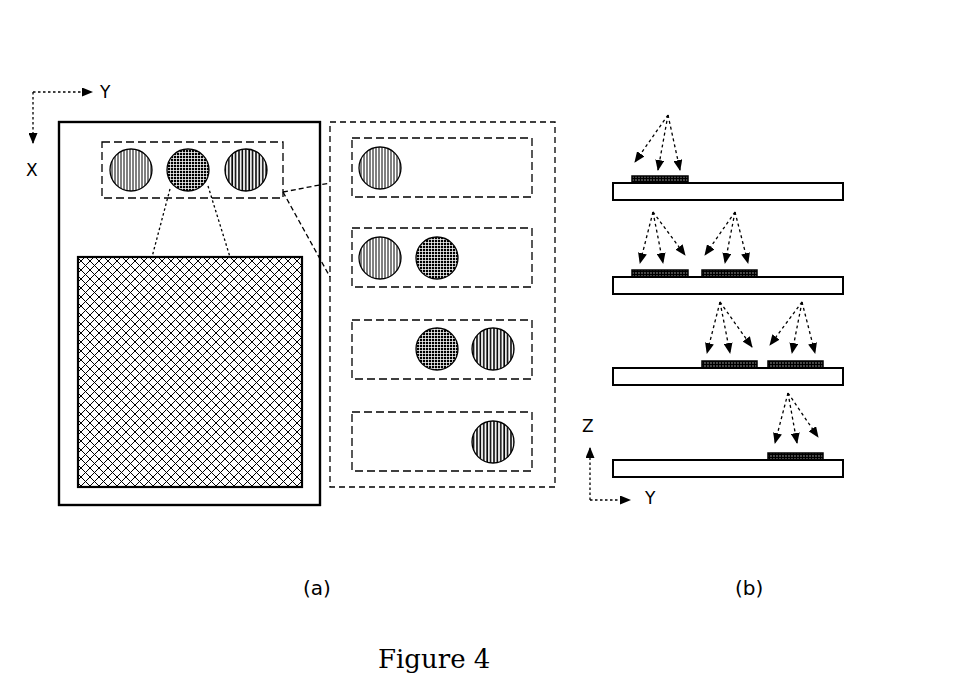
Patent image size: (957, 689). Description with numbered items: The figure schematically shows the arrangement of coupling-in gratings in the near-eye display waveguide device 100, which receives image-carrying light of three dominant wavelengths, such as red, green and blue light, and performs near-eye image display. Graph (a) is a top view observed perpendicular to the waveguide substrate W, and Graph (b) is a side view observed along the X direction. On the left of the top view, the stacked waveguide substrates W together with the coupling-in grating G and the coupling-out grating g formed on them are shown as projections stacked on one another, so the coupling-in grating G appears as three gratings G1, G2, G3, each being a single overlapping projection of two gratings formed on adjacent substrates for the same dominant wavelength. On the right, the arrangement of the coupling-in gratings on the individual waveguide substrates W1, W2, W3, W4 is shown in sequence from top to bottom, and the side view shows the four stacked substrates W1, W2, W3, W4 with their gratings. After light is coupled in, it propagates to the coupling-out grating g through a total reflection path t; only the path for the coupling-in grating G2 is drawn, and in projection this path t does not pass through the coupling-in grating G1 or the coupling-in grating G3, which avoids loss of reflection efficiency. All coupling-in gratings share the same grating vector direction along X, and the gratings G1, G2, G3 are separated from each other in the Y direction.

The near-eye display waveguide device 100 is at (293, 65).
The waveguide substrate W is at (190, 506).
The coupling-out grating g is at (78, 375).
The coupling-in grating G is at (178, 121).
The coupling-in grating for the first dominant wavelength G1 is at (131, 197).
The coupling-in grating for the second dominant wavelength G2 is at (188, 150).
The coupling-in grating for the third dominant wavelength G3 is at (246, 197).
The total reflection path t is at (161, 222).
The first waveguide substrate W1 is at (845, 192).
The second waveguide substrate W2 is at (845, 287).
The third waveguide substrate W3 is at (845, 377).
The fourth waveguide substrate W4 is at (845, 468).